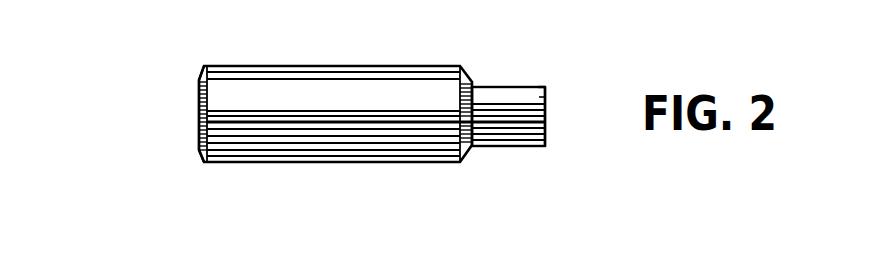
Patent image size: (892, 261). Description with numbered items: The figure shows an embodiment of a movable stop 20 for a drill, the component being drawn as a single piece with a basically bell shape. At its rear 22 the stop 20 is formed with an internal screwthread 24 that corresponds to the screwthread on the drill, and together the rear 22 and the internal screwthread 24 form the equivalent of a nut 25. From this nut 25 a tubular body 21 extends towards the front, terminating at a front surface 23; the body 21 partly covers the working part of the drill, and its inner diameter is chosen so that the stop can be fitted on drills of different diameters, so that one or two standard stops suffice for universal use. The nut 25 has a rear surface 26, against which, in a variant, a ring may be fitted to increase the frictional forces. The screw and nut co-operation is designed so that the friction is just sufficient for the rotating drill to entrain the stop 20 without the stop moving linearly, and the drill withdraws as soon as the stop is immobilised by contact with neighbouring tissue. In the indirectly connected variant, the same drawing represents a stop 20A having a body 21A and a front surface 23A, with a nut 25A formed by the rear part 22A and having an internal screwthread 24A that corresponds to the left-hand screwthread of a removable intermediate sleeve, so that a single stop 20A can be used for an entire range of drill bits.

The movable stop 20 is at (411, 120).
The stop 20A is at (411, 120).
The tubular body 21 is at (307, 162).
The body 21A is at (335, 152).
The rear 22 is at (493, 148).
The rear part 22A is at (525, 162).
The left end face 23 is at (200, 160).
The front surface 23A is at (128, 153).
The internal screwthread 24 is at (547, 125).
The internal screwthread 24A is at (659, 162).
The nut 25 is at (499, 76).
The nut 25A is at (539, 78).
The rear surface 26 is at (547, 92).